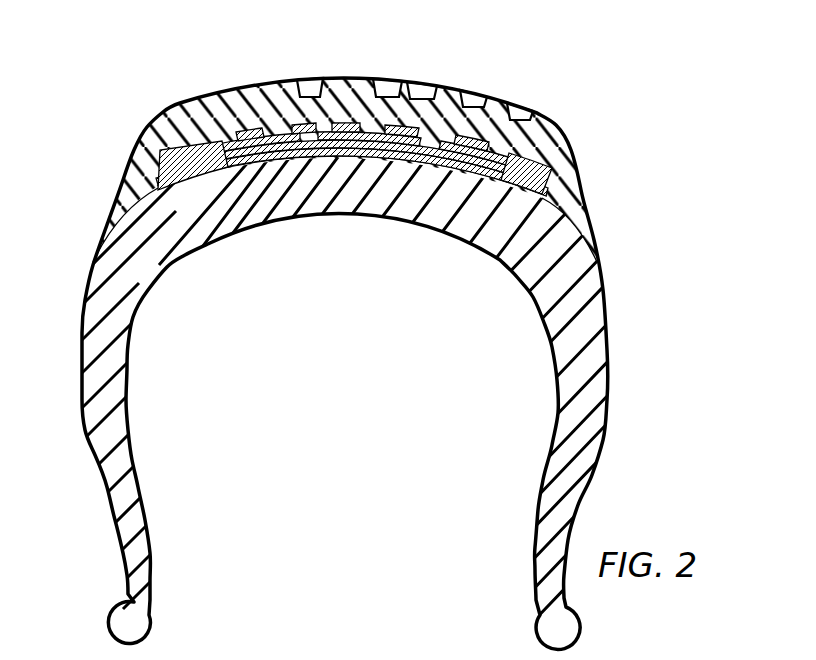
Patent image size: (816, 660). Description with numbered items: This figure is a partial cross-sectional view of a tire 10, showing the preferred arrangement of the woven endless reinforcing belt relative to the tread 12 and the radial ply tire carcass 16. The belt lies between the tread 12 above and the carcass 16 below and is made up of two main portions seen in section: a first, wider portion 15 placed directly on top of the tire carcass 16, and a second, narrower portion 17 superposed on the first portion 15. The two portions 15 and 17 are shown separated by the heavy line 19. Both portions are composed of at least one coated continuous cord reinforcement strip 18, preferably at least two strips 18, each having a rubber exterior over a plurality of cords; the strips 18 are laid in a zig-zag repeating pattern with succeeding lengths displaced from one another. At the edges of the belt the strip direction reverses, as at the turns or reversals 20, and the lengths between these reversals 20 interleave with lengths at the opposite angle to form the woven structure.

The tire 10 is at (604, 236).
The tread 12 is at (200, 120).
The first portion 15 is at (367, 157).
The tire carcass 16 is at (130, 277).
The second portion 17 is at (348, 147).
The coated continuous cord reinforcement strip 18 is at (413, 107).
The heavy line 19 is at (267, 143).
The turns or reversals 20 is at (173, 153).